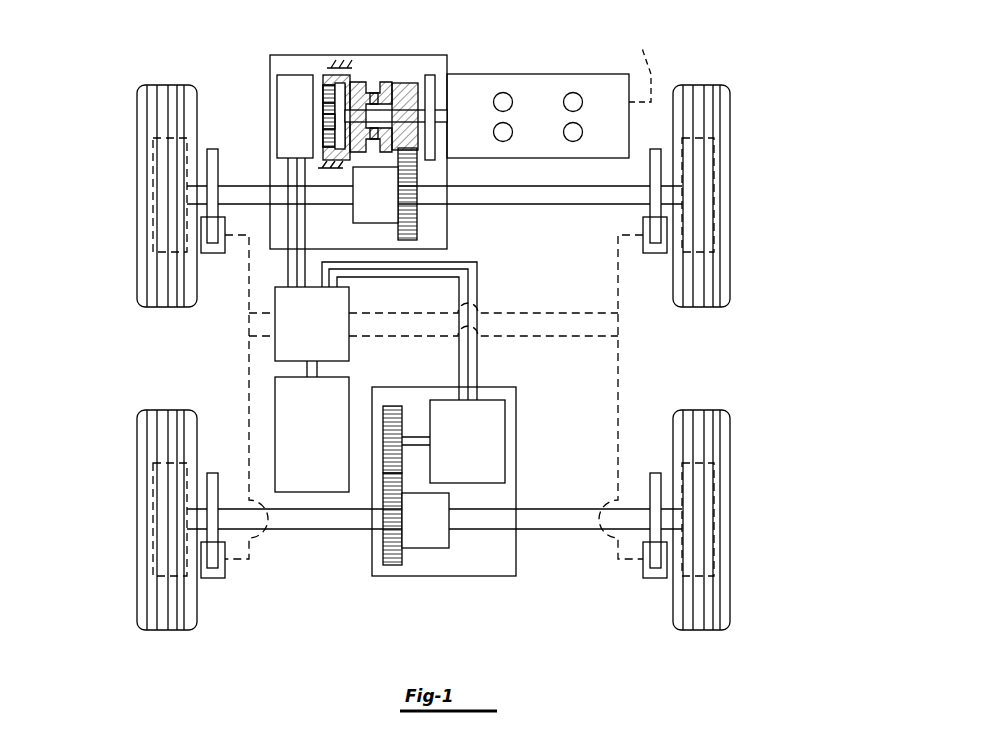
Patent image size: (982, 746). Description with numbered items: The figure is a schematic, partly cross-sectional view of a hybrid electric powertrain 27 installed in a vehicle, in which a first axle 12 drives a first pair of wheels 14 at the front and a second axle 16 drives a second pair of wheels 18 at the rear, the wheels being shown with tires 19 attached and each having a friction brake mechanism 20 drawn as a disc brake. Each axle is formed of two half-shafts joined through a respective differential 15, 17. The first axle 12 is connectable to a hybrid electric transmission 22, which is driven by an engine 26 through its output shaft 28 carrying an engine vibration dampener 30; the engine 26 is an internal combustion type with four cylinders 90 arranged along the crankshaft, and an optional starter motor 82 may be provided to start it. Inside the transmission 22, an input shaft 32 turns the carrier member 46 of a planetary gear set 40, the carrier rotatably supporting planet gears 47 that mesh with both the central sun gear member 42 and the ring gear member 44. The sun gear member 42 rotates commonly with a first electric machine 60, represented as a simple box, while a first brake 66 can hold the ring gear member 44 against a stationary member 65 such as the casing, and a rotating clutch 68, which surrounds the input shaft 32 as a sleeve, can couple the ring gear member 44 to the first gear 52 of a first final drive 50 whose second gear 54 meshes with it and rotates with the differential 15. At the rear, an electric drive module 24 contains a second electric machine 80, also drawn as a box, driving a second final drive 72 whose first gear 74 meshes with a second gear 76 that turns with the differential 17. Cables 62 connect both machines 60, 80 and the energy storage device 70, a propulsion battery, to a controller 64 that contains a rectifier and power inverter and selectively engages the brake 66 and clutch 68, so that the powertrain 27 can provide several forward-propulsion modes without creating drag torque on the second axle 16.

The first axle 12 is at (324, 206).
The first pair of wheels 14 is at (136, 196).
The differential 15 is at (386, 204).
The second axle 16 is at (310, 532).
The differential 17 is at (435, 530).
The second pair of wheels 18 is at (136, 520).
The tires 19 is at (167, 85).
The friction brake mechanism 20 is at (213, 253).
The hybrid electric transmission 22 is at (336, 56).
The electric drive module 24 is at (516, 448).
The engine 26 is at (548, 123).
The hybrid powertrain 27 is at (508, 258).
The output shaft 28 is at (440, 105).
The engine vibration dampener 30 is at (430, 75).
The input shaft 32 is at (371, 112).
The planetary gear set 40 is at (318, 70).
The sun gear member 42 is at (328, 108).
The ring gear member 44 is at (348, 150).
The carrier member 46 is at (338, 123).
The planet gears 47 is at (328, 92).
The first final drive 50 is at (428, 173).
The first gear 52 is at (409, 82).
The second gear 54 is at (420, 228).
The first electric machine 60 is at (277, 70).
The cables 62 is at (287, 267).
The controller 64 is at (321, 333).
The stationary member 65 is at (318, 168).
The first brake 66 is at (354, 70).
The rotating clutch 68 is at (380, 83).
The energy storage device 70 is at (321, 441).
The second final drive 72 is at (358, 538).
The first gear 74 is at (393, 406).
The second gear 76 is at (393, 565).
The second electric machine 80 is at (477, 449).
The starter motor 82 is at (641, 65).
The cylinders 90 is at (493, 103).